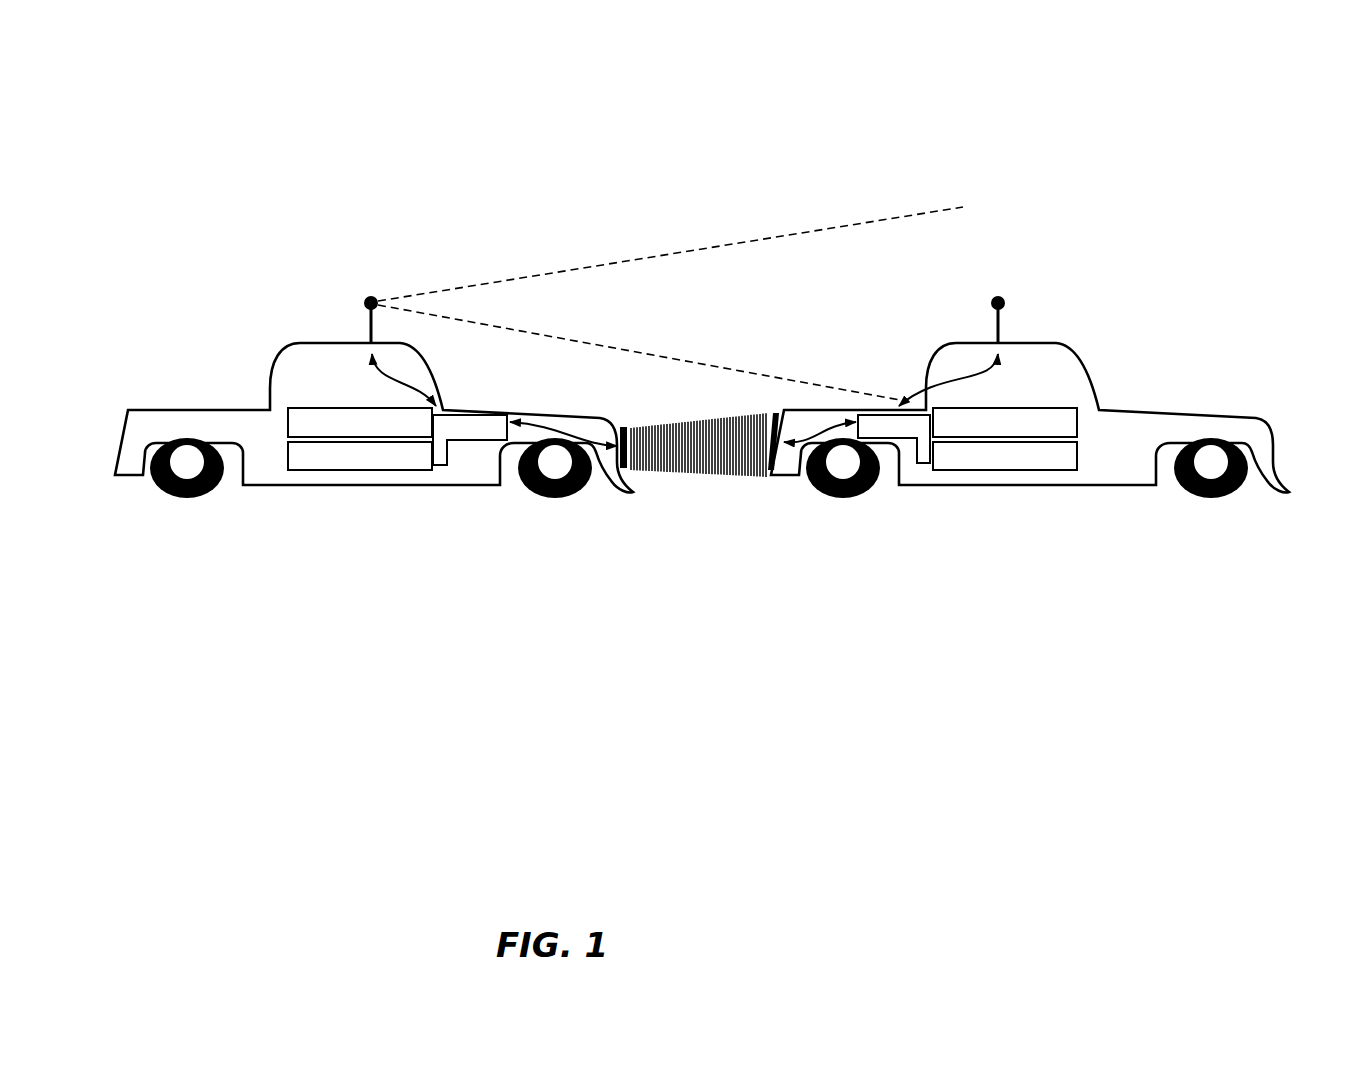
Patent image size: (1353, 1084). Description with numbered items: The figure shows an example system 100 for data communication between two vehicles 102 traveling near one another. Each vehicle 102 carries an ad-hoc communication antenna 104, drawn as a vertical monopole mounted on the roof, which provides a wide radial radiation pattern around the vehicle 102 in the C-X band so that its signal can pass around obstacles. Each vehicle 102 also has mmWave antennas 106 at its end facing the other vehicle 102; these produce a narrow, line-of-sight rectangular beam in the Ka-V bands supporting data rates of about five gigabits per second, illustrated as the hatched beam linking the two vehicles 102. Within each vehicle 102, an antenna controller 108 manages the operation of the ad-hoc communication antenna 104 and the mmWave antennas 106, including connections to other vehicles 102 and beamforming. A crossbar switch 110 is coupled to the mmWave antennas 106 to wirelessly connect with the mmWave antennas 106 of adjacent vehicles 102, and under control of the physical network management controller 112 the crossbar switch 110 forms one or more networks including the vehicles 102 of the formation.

The system 100 is at (235, 78).
The vehicle 102 is at (252, 490).
The ad-hoc communication antenna 104 is at (1042, 220).
The mmWave antennas 106 is at (754, 498).
The antenna controller 108 is at (444, 468).
The crossbar switch 110 is at (364, 472).
The physical network management controller 112 is at (1095, 283).